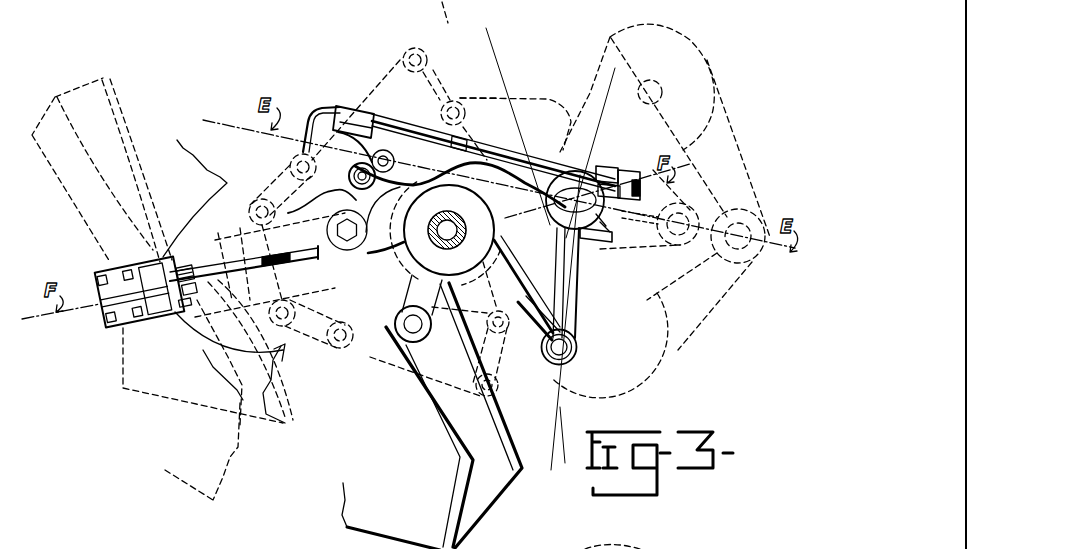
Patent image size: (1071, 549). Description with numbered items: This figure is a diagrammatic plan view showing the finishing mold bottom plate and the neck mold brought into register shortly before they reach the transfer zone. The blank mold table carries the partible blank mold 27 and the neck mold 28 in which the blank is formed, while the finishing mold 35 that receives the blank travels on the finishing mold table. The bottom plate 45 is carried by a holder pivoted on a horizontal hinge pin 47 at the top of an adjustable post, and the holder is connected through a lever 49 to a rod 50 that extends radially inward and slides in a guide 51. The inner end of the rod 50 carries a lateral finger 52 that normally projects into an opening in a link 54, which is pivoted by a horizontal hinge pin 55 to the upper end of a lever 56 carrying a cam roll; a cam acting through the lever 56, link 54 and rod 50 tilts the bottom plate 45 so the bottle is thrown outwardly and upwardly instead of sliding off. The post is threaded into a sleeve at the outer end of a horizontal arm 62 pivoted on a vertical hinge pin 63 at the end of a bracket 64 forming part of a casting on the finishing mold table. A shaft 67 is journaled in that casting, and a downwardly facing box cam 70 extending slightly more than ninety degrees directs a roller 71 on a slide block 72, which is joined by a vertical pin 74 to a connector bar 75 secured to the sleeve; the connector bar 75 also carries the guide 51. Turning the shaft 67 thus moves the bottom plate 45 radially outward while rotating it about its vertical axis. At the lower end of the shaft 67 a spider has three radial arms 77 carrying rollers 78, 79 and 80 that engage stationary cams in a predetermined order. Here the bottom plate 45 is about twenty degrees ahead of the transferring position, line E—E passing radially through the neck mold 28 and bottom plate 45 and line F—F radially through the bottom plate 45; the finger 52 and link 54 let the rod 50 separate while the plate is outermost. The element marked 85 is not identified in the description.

The blank mold 27 is at (705, 60).
The neck mold 28 is at (590, 160).
The finishing mold 35 is at (549, 101).
The bottom plate 45 is at (548, 210).
The horizontal hinge pin 47 is at (598, 240).
The lever 49 is at (623, 170).
The rod 50 is at (400, 126).
The guide 51 is at (368, 120).
The lateral finger 52 is at (303, 148).
The link 54 is at (272, 262).
The horizontal hinge pin 55 is at (179, 312).
The lever 56 is at (189, 262).
The horizontal arm 62 is at (573, 315).
The vertical hinge pin 63 is at (578, 349).
The bracket 64 is at (530, 340).
The shaft 67 is at (449, 230).
The box cam 70 is at (394, 252).
The roller 71 is at (398, 200).
The slide block 72 is at (360, 190).
The vertical pin 74 is at (370, 162).
The connector bar 75 is at (492, 184).
The radial arms 77 is at (438, 300).
The roller 78 is at (410, 347).
The roller 79 is at (322, 197).
The roller 80 is at (346, 250).
The pedal 85 is at (485, 434).